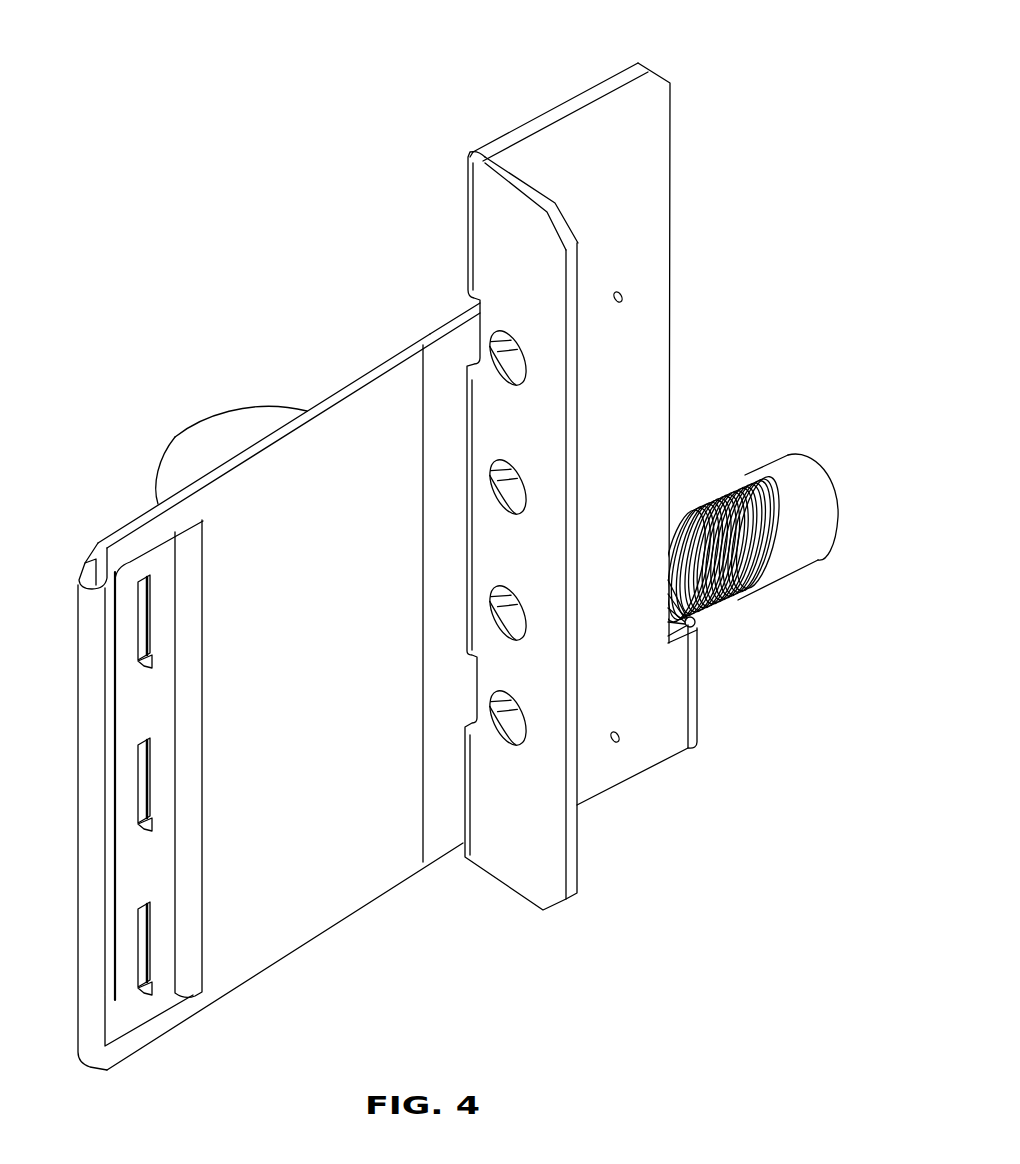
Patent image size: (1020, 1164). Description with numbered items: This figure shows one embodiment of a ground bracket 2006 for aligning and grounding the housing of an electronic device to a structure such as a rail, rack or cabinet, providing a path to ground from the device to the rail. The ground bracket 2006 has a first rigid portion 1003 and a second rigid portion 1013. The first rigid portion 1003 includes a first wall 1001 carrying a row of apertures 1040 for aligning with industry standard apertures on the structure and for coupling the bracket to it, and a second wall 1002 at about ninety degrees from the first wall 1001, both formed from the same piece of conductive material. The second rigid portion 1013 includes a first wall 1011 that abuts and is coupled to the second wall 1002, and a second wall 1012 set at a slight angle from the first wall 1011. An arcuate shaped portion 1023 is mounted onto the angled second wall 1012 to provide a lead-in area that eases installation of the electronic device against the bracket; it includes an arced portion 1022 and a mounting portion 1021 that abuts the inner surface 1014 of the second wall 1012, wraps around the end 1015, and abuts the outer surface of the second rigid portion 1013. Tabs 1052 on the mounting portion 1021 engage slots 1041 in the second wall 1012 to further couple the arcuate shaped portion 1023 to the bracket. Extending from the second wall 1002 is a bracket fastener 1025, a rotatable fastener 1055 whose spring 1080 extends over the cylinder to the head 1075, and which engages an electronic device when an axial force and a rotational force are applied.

The ground bracket 2006 is at (243, 242).
The first wall 1001 is at (540, 194).
The second wall 1002 is at (612, 78).
The first rigid portion 1003 is at (508, 185).
The first wall 1011 is at (380, 363).
The second wall 1012 is at (453, 320).
The second rigid portion 1013 is at (422, 330).
The inner surface 1014 is at (330, 387).
The end 1015 is at (88, 578).
The mounting portion 1021 is at (80, 680).
The arced portion 1022 is at (168, 460).
The arcuate shaped portion 1023 is at (150, 478).
The bracket fastener 1025 is at (752, 660).
The aperture 1040 is at (522, 365).
The slots 1041 is at (150, 670).
The tabs 1052 is at (148, 623).
The rotatable fastener 1055 is at (800, 466).
The head 1075 is at (816, 556).
The spring 1080 is at (750, 598).